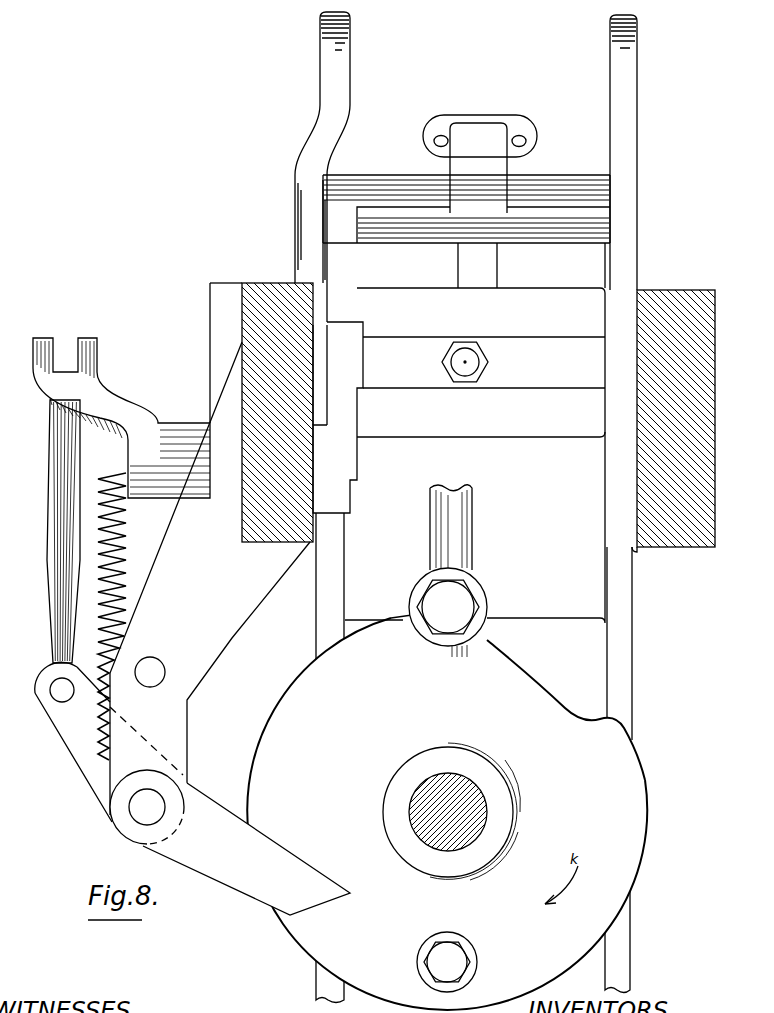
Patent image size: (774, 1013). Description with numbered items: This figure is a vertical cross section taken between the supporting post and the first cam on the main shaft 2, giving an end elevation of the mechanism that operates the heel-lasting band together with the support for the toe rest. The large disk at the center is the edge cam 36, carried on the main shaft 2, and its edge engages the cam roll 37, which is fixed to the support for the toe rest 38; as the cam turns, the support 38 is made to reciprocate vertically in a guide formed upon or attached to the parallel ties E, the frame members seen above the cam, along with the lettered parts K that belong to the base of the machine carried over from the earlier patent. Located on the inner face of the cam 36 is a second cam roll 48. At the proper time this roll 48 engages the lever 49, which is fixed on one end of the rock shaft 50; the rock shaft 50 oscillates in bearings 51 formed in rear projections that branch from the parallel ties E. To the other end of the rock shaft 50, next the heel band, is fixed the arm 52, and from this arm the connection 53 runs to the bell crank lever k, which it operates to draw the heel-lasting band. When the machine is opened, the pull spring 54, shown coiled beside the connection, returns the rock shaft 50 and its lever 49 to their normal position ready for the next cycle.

The shaft hub 2 is at (410, 808).
The edge cam 36 is at (447, 812).
The cam roll 37 is at (472, 607).
The support for the toe rest 38 is at (465, 571).
The cam roll 48 is at (478, 962).
The lever 49 is at (230, 842).
The rock shaft 50 is at (163, 800).
The bearings 51 is at (190, 752).
The arm 52 is at (73, 742).
The connection 53 is at (47, 531).
The pull spring 54 is at (120, 548).
The guide rods K is at (325, 67).
The bell crank lever k is at (121, 390).
The parallel ties E is at (345, 460).